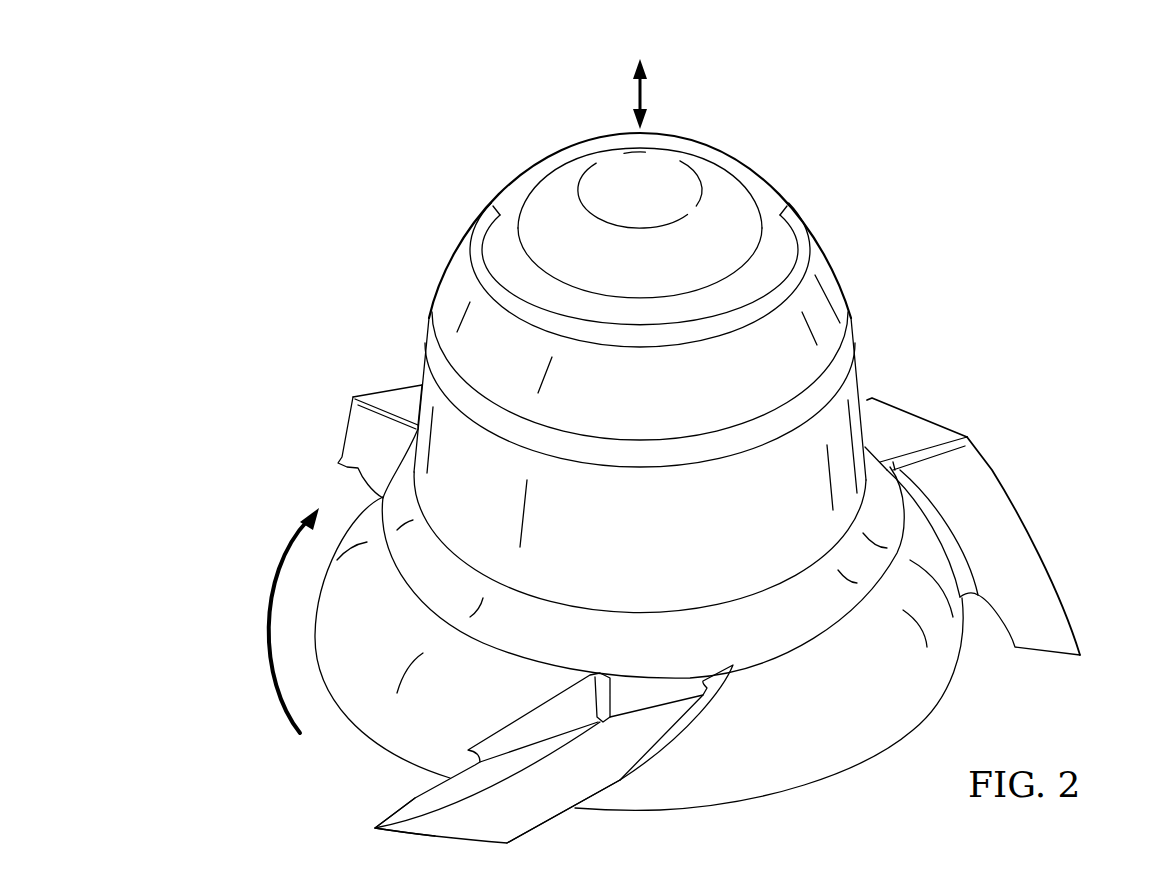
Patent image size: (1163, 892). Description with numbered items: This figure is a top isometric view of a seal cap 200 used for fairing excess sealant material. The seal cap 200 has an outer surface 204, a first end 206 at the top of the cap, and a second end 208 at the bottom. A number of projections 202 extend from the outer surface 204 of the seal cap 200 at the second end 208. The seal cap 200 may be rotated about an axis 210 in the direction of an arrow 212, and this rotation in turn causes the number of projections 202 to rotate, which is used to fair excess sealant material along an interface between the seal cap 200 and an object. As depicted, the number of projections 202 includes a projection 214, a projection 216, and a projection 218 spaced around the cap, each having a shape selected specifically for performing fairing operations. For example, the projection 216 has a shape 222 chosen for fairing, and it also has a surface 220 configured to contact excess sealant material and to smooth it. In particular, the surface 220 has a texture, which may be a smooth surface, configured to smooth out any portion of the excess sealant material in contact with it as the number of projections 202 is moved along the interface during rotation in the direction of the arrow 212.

The seal cap 200 is at (757, 178).
The number of projections 202 is at (1052, 523).
The outer surface 204 is at (827, 278).
The first end 206 is at (527, 165).
The second end 208 is at (807, 796).
The axis 210 is at (639, 91).
The arrow 212 is at (268, 617).
The projection 214 is at (1058, 603).
The projection 216 is at (530, 829).
The projection 218 is at (352, 418).
The surface 220 is at (556, 820).
The shape 222 is at (384, 802).